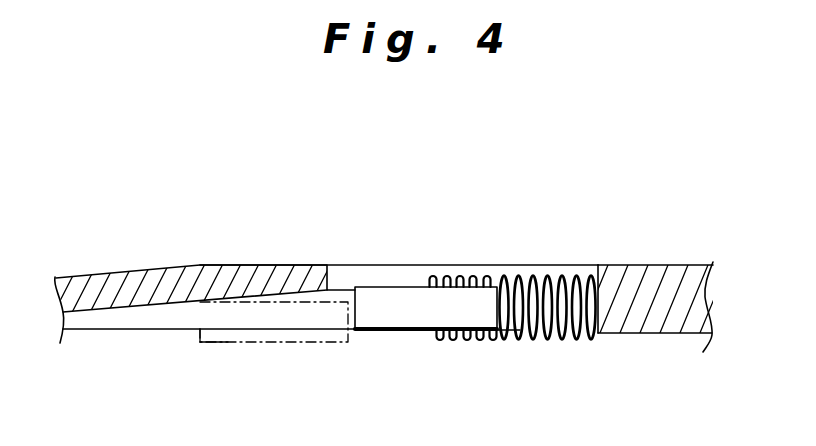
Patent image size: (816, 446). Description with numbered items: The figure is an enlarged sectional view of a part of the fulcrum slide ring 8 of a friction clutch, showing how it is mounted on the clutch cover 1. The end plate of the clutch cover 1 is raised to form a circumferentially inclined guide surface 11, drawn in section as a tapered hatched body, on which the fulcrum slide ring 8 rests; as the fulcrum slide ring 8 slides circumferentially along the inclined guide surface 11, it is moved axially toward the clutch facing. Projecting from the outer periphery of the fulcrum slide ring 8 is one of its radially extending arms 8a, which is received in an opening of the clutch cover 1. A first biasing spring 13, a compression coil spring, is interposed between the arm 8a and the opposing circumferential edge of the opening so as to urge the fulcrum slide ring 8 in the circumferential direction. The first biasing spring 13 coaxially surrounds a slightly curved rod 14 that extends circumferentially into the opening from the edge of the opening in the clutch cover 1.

The clutch cover 1 is at (663, 272).
The fulcrum slide ring 8 is at (260, 331).
The arm 8a is at (330, 345).
The inclined guide surface 11 is at (147, 272).
The first biasing spring 13 is at (532, 278).
The rod 14 is at (590, 318).